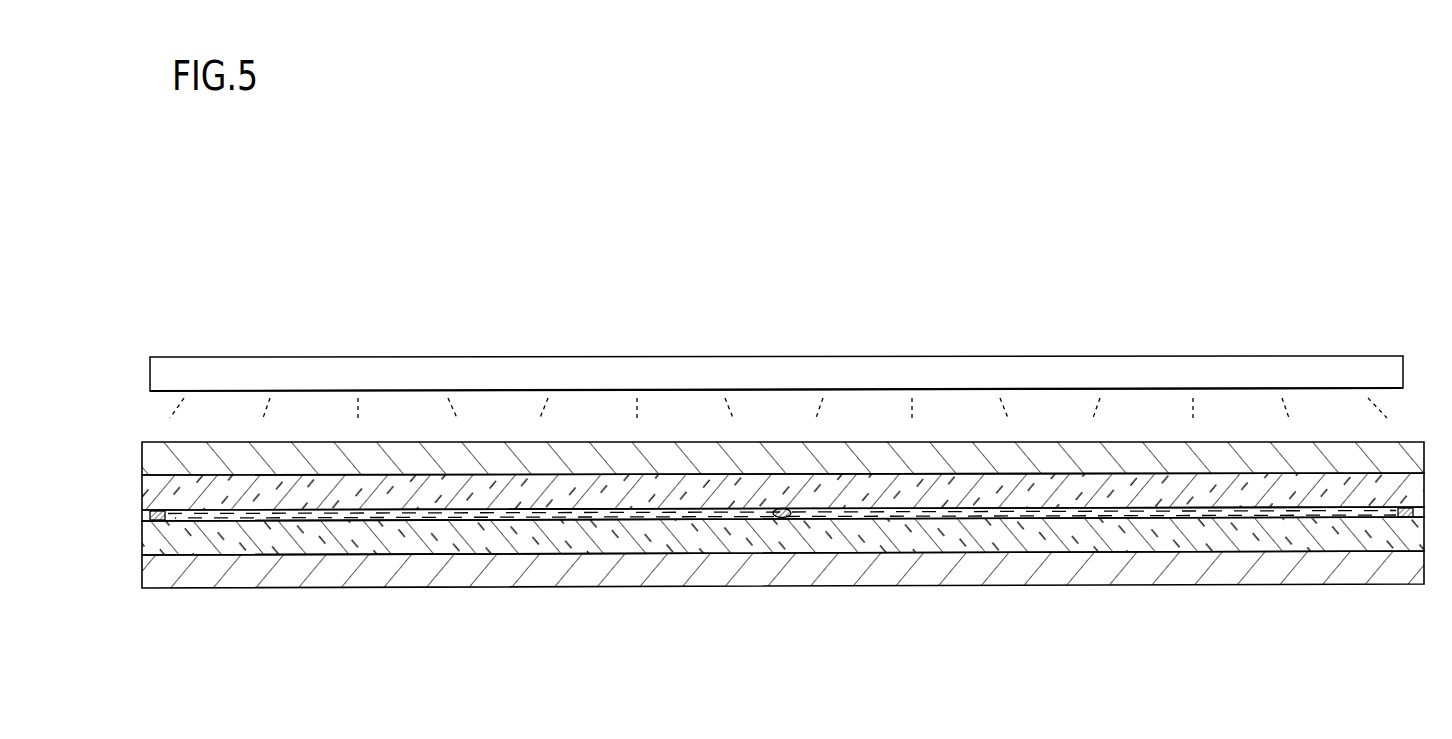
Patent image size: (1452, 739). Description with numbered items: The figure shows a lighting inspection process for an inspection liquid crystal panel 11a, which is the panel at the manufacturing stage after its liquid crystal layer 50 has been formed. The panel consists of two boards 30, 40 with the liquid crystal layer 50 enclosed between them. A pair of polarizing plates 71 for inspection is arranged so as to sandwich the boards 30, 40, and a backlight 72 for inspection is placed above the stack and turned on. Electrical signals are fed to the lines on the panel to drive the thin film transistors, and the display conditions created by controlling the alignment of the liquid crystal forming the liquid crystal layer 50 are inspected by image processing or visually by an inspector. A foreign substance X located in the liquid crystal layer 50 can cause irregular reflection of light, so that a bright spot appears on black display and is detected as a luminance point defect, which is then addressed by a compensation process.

The polarizing plates 71 is at (253, 570).
The backlight 72 is at (998, 372).
The board 30 is at (1164, 490).
The board 40 is at (1058, 540).
The liquid crystal layer 50 is at (968, 511).
The foreign substance X is at (779, 516).
The inspection liquid crystal panel 11a is at (134, 478).